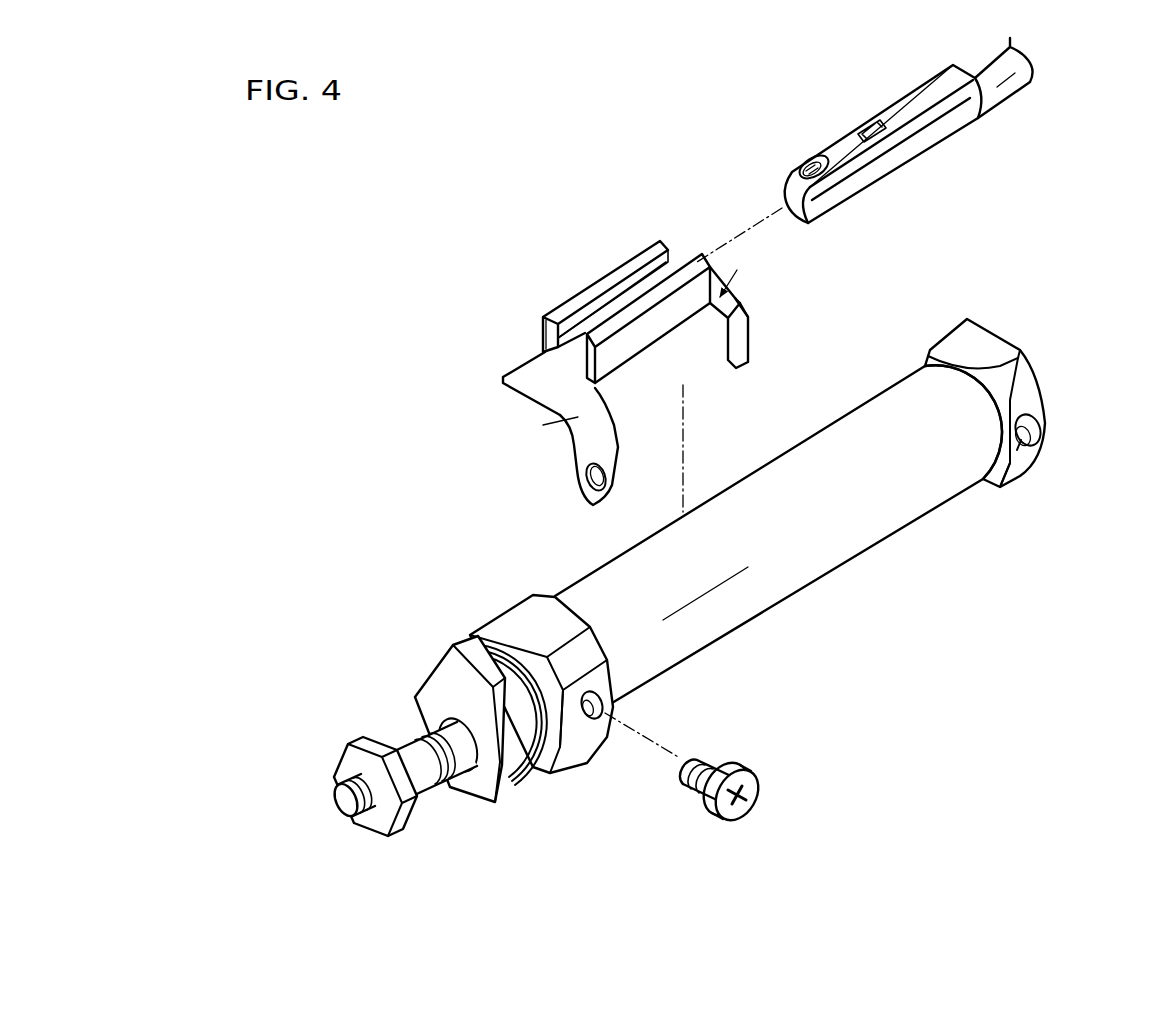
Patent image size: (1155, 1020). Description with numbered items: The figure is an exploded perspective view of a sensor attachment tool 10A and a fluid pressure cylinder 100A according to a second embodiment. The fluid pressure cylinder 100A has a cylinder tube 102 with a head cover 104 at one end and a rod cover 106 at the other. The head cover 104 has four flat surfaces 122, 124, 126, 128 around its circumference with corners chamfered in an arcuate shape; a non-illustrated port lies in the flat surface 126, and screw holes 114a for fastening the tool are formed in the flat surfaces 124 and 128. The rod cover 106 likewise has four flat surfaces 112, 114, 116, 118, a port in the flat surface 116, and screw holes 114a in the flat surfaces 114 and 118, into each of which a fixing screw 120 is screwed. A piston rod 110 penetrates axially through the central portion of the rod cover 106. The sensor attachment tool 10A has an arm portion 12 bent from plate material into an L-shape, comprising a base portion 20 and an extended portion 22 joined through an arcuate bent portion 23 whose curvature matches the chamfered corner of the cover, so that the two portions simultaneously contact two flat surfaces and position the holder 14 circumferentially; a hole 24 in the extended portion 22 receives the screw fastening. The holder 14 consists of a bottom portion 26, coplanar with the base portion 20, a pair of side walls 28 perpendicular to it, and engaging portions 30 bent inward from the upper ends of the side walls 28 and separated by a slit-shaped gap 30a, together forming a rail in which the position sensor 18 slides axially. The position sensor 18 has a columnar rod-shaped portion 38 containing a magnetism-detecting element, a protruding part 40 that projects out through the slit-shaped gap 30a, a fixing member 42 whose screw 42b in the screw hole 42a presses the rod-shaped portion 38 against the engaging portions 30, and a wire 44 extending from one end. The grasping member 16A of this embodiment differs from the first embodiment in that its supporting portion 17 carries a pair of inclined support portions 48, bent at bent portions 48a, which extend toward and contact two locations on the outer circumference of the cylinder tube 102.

The sensor attachment tool 10A is at (480, 312).
The arm portion 12 is at (557, 421).
The holder 14 is at (656, 296).
The grasping member 16A is at (752, 287).
The supporting portion 17 is at (740, 271).
The position sensor 18 is at (898, 133).
The base portion 20 is at (573, 444).
The extended portion 22 is at (615, 446).
The bent portion 23 is at (578, 418).
The hole 24 is at (604, 470).
The bottom portion 26 is at (545, 340).
The side walls 28 is at (612, 270).
The engaging portions 30 is at (655, 297).
The slit-shaped gap 30a is at (615, 315).
The rod-shaped portion 38 is at (922, 143).
The protruding part 40 is at (937, 88).
The fixing member 42 is at (774, 154).
The screw hole 42a is at (810, 158).
The screw 42b is at (787, 181).
The wire 44 is at (1008, 95).
The support portions 48 is at (738, 275).
The bent portions 48a is at (673, 253).
The fluid pressure cylinder 100A is at (1032, 246).
The cylinder tube 102 is at (878, 517).
The head cover 104 is at (994, 421).
The rod cover 106 is at (536, 672).
The piston rod 110 is at (403, 745).
The flat surface 112 is at (560, 620).
The flat surface 114 is at (580, 737).
The screw holes 114a is at (607, 693).
The flat surface 116 is at (530, 770).
The flat surface 118 is at (465, 648).
The fixing screw 120 is at (747, 763).
The flat surface 122 is at (980, 342).
The flat surface 124 is at (1042, 442).
The flat surface 126 is at (985, 488).
The flat surface 128 is at (917, 360).